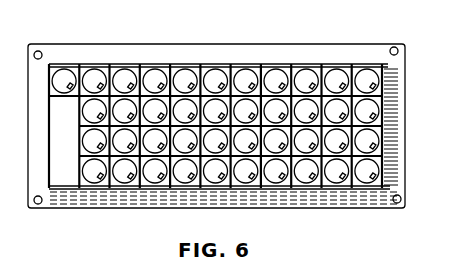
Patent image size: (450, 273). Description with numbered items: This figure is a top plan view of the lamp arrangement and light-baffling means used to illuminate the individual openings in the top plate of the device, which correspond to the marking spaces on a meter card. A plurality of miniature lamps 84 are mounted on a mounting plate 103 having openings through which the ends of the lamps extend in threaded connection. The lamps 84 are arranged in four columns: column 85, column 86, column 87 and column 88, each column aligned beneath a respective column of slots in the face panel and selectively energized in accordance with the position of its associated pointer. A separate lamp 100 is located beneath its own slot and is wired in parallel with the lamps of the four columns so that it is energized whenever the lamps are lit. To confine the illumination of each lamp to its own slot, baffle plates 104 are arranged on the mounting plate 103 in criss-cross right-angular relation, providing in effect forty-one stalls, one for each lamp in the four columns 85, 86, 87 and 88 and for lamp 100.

The lamp 100 is at (63, 69).
The miniature lamps 84 is at (95, 69).
The baffle plates 104 is at (157, 64).
The mounting plate 103 is at (297, 44).
The column of lamps 88 is at (378, 79).
The column of lamps 87 is at (378, 112).
The column of lamps 86 is at (378, 143).
The column of lamps 85 is at (378, 174).